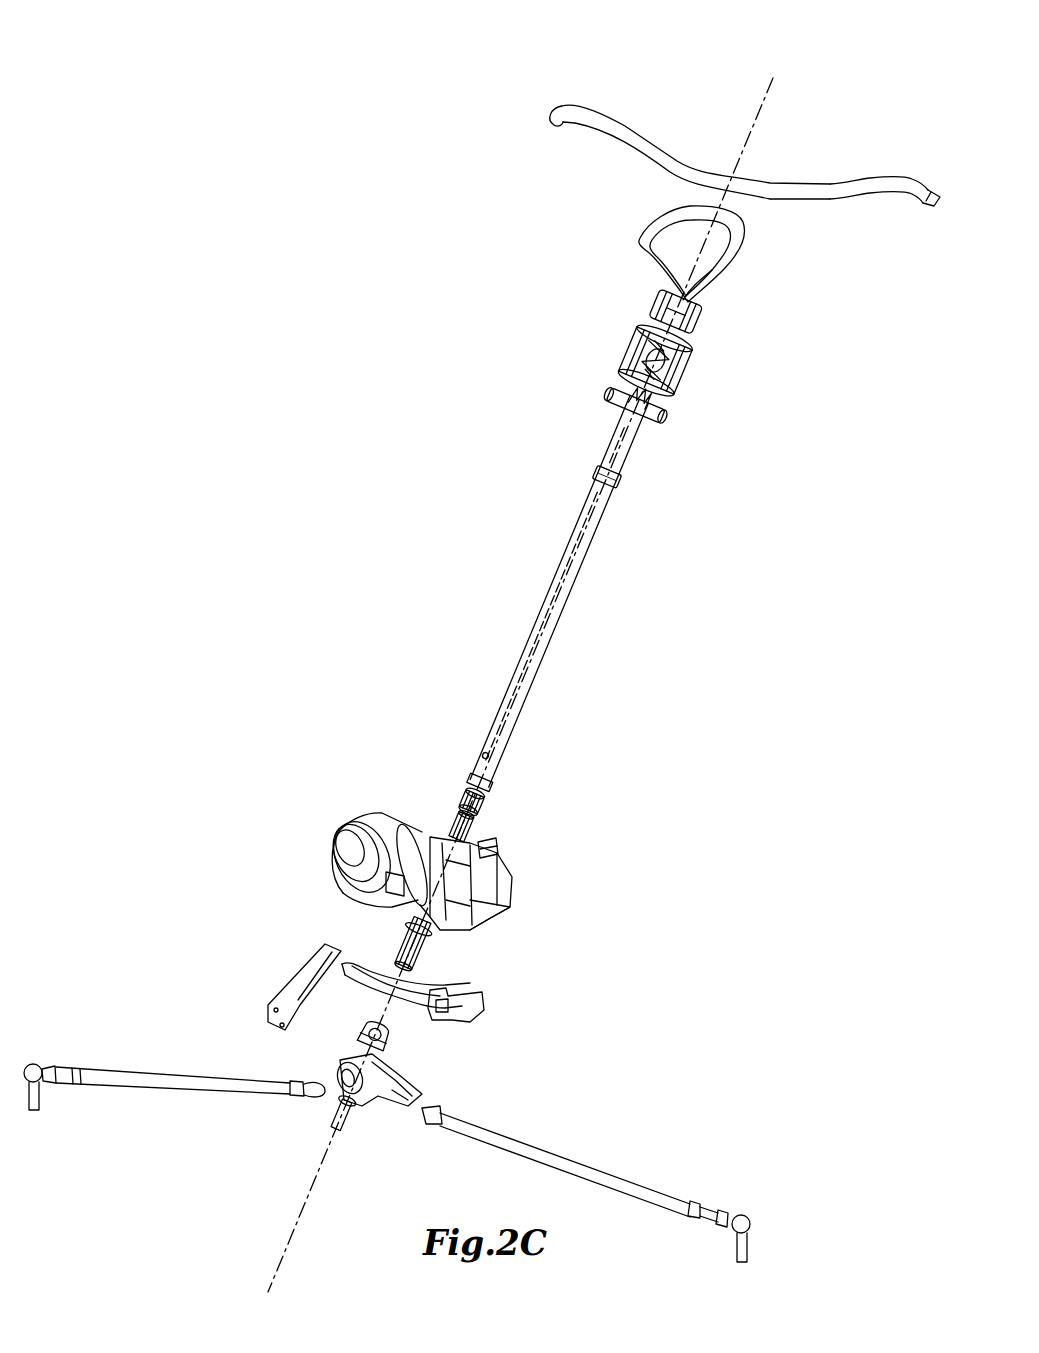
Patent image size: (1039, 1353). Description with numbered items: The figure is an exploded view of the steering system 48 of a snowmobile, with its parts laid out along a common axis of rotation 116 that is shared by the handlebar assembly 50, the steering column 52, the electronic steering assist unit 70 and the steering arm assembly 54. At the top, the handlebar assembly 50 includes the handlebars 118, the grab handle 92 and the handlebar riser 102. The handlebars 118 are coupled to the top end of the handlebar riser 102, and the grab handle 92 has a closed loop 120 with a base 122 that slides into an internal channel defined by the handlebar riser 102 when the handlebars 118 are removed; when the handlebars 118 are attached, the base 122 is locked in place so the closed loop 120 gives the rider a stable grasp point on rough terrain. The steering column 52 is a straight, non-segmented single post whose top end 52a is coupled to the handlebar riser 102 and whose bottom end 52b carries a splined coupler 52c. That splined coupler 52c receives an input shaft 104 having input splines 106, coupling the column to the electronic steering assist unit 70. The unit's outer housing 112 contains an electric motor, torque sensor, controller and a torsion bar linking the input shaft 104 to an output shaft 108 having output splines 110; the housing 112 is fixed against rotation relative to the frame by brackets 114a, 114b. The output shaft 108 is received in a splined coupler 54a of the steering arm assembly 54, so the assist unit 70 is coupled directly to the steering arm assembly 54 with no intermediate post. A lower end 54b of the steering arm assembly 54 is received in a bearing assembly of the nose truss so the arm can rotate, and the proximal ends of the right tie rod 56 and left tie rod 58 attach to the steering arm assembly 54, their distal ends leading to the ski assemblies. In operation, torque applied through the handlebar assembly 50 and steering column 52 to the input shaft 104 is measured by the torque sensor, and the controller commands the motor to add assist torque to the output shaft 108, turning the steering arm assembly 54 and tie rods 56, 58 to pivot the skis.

The steering system 48 is at (575, 98).
The handlebar assembly 50 is at (648, 138).
The handlebars 118 is at (866, 180).
The grab handle 92 is at (691, 254).
The closed loop 120 is at (737, 250).
The base 122 is at (702, 312).
The handlebar riser 102 is at (632, 344).
The top end 52a is at (650, 440).
The steering column 52 is at (509, 587).
The bottom end 52b is at (485, 762).
The splined coupler 52c is at (490, 796).
The electronic steering assist unit 70 is at (465, 859).
The input shaft 104 is at (476, 828).
The input splines 106 is at (497, 850).
The outer housing 112 is at (486, 920).
The output splines 110 is at (430, 950).
The output shaft 108 is at (420, 966).
The bracket 114a is at (302, 988).
The bracket 114b is at (448, 1012).
The splined coupler 54a is at (382, 1046).
The steering arm assembly 54 is at (399, 1108).
The lower end 54b is at (338, 1110).
The right tie rod 56 is at (130, 1082).
The left tie rod 58 is at (622, 1182).
The common axis of rotation 116 is at (290, 1242).